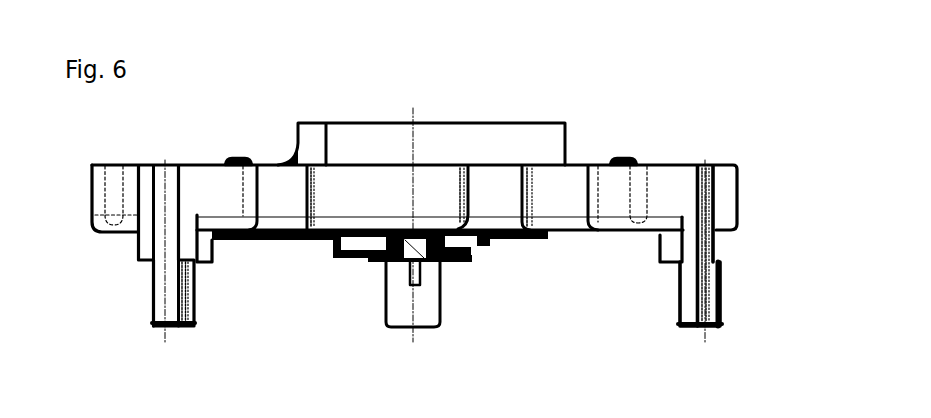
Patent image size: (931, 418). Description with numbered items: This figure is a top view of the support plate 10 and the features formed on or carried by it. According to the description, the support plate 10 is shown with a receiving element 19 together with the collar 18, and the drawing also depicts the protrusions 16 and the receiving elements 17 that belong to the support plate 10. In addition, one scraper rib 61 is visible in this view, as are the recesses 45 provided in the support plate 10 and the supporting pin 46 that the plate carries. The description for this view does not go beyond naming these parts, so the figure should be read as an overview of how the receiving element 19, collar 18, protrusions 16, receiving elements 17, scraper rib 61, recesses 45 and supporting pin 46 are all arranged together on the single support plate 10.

The support plate 10 is at (630, 78).
The protrusions 16 is at (147, 245).
The receiving elements 17 is at (188, 303).
The collar 18 is at (367, 180).
The receiving element 19 is at (502, 145).
The recesses 45 is at (167, 183).
The supporting pin 46 is at (420, 252).
The scraper rib 61 is at (422, 280).